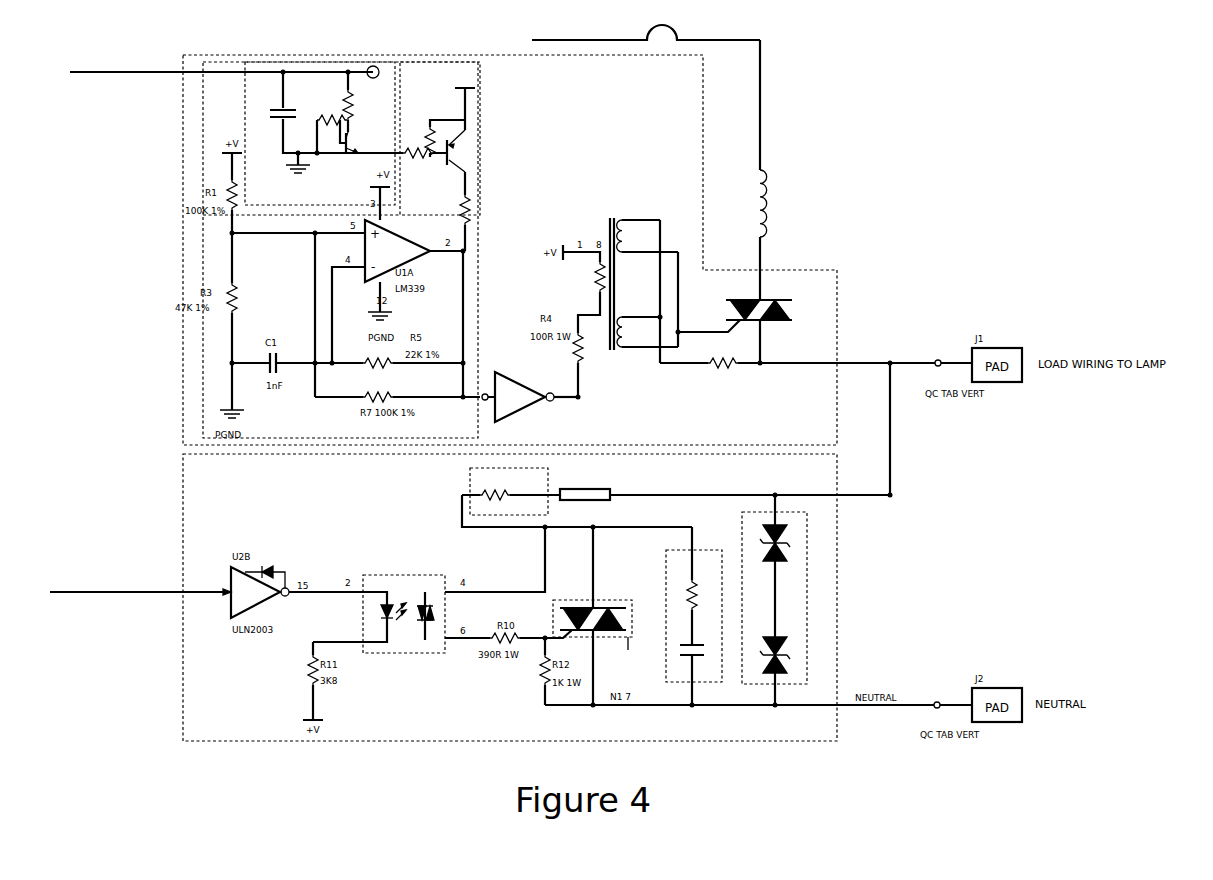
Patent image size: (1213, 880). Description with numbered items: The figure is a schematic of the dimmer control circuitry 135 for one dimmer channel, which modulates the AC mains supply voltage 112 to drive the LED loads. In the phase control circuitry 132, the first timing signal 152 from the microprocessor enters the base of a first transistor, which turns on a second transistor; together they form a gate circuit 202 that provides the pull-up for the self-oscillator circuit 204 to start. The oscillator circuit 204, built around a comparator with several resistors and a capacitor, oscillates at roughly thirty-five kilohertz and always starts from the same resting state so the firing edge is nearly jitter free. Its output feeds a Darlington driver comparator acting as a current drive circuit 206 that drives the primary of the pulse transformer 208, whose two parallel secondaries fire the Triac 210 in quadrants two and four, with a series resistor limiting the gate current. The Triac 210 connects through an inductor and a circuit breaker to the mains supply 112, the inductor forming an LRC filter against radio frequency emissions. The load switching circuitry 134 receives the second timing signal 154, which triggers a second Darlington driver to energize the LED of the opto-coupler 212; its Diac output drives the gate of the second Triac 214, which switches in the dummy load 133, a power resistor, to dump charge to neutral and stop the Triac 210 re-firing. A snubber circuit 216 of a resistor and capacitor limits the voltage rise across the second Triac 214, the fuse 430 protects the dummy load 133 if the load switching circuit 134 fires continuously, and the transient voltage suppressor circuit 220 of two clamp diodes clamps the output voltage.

The first timing signal 152 is at (150, 74).
The gate circuit 202 is at (290, 62).
The self-oscillator circuit 204 is at (482, 122).
The pulse transformer 208 is at (626, 184).
The AC mains supply voltage 112 is at (725, 40).
The dimmer control circuitry 135 is at (1046, 143).
The phase control circuitry 132 is at (816, 333).
The Triac 210 is at (771, 335).
The current drive circuit 206 is at (576, 418).
The dummy load 133 is at (468, 486).
The fuse 430 is at (578, 488).
The second timing signal 154 is at (150, 596).
The opto-coupler 212 is at (425, 672).
The Triac 214 is at (638, 628).
The snubber circuit 216 is at (722, 663).
The transient voltage suppressor circuit 220 is at (808, 660).
The load switching circuitry 134 is at (840, 595).